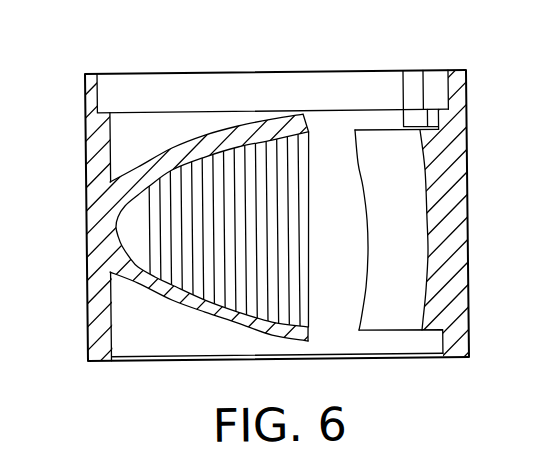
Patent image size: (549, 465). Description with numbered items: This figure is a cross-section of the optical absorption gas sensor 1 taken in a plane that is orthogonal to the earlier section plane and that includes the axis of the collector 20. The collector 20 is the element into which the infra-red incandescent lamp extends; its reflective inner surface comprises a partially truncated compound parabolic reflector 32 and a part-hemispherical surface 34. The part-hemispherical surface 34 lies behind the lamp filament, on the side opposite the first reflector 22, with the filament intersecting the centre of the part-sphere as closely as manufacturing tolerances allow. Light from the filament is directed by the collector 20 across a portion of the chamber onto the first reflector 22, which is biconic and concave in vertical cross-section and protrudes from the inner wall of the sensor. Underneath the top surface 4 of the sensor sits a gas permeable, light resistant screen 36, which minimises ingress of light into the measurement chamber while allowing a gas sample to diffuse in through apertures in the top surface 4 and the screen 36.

The optical absorption gas sensor 1 is at (72, 67).
The top surface 4 is at (278, 71).
The gas permeable, light resistant screen 36 is at (362, 75).
The first reflector 22 is at (426, 160).
The part-hemispherical surface 34 is at (92, 236).
The partially truncated compound parabolic reflector 32 is at (199, 301).
The collector 20 is at (234, 284).